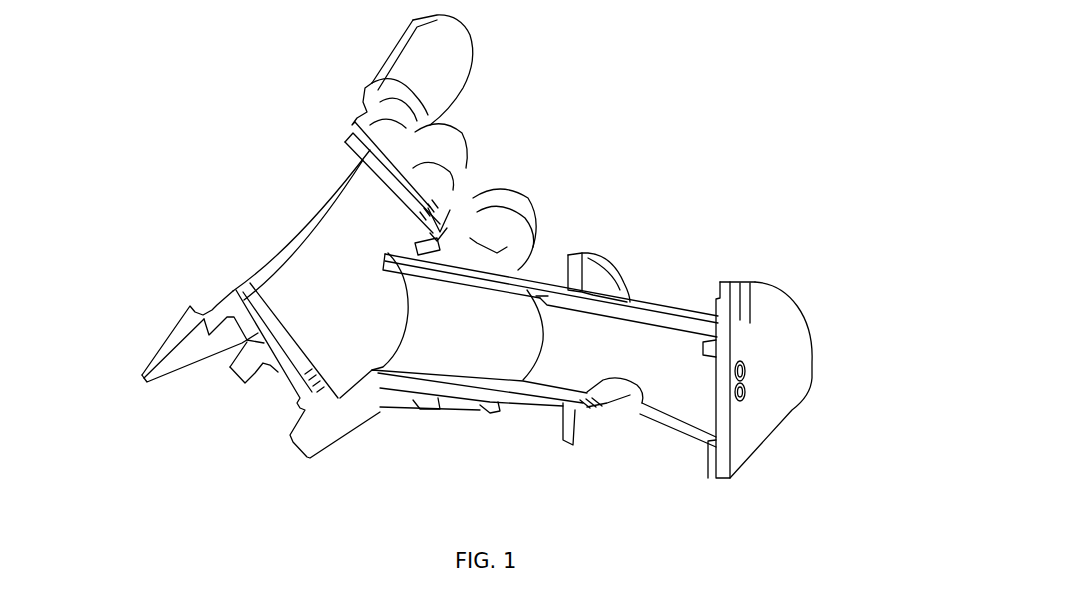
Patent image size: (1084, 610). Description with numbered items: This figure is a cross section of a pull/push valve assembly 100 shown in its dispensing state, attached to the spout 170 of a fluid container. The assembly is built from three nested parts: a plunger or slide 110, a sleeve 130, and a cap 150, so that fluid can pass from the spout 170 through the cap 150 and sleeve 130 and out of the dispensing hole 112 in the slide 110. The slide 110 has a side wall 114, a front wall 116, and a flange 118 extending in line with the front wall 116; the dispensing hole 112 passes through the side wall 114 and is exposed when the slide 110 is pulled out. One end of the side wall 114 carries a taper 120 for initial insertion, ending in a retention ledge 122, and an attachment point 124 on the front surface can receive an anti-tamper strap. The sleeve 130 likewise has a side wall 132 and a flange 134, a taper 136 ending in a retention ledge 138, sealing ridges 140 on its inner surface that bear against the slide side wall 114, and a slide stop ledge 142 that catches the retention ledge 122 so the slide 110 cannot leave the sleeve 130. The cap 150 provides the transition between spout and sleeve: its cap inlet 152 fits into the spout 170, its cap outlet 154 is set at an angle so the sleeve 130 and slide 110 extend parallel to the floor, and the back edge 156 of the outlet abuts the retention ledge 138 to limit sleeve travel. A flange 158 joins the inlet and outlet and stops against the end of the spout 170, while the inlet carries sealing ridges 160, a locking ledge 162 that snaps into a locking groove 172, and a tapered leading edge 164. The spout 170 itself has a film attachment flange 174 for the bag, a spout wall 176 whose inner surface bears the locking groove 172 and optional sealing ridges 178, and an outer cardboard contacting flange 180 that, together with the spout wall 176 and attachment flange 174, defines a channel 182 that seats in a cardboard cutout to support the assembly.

The pull/push valve assembly 100 is at (634, 109).
The slide 110 is at (808, 494).
The dispensing hole 112 is at (633, 410).
The side wall 114 is at (682, 315).
The front wall 116 is at (723, 385).
The flange 118 is at (803, 307).
The taper 120 is at (526, 297).
The retention ledge 122 is at (541, 393).
The attachment point 124 is at (754, 283).
The sleeve 130 is at (556, 504).
The side wall 132 is at (490, 387).
The flange 134 is at (580, 250).
The taper 136 is at (388, 260).
The retention ledge 138 is at (397, 372).
The sealing ridges 140 is at (590, 415).
The slide stop ledge 142 is at (538, 398).
The cap 150 is at (351, 494).
The cap inlet 152 is at (262, 289).
The cap outlet 154 is at (476, 410).
The back edge 156 is at (415, 244).
The flange 158 is at (512, 198).
The sealing ridges 160 is at (395, 171).
The locking ledge 162 is at (427, 208).
The tapered leading edge 164 is at (348, 138).
The spout 170 is at (149, 432).
The locking groove 172 is at (447, 208).
The film attachment flange 174 is at (393, 50).
The spout wall 176 is at (282, 380).
The sealing ridges 178 is at (262, 338).
The cardboard contacting flange 180 is at (452, 133).
The channel 182 is at (428, 115).